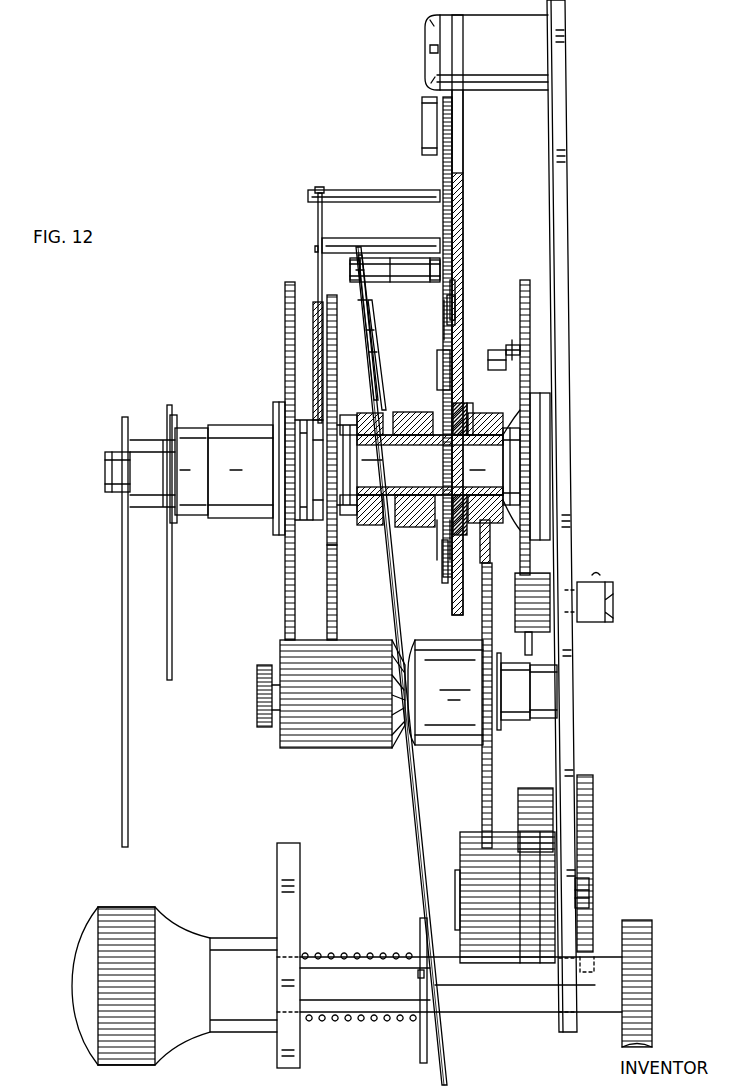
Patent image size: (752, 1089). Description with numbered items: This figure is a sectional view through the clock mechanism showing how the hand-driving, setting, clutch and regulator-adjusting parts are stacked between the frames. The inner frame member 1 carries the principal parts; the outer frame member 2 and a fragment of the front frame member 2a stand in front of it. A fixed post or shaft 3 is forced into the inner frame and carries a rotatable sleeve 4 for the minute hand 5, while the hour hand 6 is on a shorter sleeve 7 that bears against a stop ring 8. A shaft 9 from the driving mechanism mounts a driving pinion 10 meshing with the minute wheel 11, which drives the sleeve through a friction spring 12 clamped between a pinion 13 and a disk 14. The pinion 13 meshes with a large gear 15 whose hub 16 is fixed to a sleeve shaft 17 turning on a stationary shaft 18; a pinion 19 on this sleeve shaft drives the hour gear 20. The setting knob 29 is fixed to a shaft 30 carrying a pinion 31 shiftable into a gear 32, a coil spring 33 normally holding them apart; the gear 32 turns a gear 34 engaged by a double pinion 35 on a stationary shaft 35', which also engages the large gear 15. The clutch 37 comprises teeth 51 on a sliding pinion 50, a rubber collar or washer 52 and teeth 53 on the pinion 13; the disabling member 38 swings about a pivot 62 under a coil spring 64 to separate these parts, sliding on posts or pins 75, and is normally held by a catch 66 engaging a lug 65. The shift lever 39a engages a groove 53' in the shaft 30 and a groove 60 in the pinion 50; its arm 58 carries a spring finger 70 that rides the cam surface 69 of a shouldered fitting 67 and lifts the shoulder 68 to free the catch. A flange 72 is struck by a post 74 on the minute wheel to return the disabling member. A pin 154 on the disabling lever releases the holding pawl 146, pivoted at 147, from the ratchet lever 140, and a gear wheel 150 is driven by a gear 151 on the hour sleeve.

The inner frame member 1 is at (558, 195).
The outer frame member 2 is at (463, 168).
The front frame member 2a is at (283, 897).
The fixed post or shaft 3 is at (105, 470).
The sleeve 4 is at (416, 446).
The minute hand 5 is at (130, 812).
The hour hand 6 is at (172, 672).
The sleeve 7 is at (250, 495).
The stop ring 8 is at (350, 418).
The shaft 9 is at (600, 586).
The driving pinion 10 is at (530, 594).
The minute wheel 11 is at (530, 302).
The friction spring 12 is at (516, 538).
The pinion 13 is at (482, 412).
The disk 14 is at (540, 426).
The large gear 15 is at (484, 796).
The hub 16 is at (462, 728).
The sleeve shaft 17 is at (522, 702).
The stationary shaft 18 is at (258, 698).
The pinion 19 is at (338, 736).
The hour gear 20 is at (286, 580).
The setting knob 29 is at (97, 985).
The shaft 30 is at (368, 1000).
The pinion 31 is at (640, 920).
The gear 32 is at (591, 808).
The coil spring 33 is at (374, 952).
The gear 34 is at (537, 790).
The double pinion 35 is at (492, 891).
The stationary shaft 35' is at (601, 884).
The clutch 37 is at (437, 542).
The disabling member 38 is at (445, 316).
The shift lever 39a is at (412, 800).
The pinion 50 is at (422, 528).
The teeth 51 is at (432, 414).
The collar or washer 52 is at (455, 402).
The teeth 53 is at (478, 400).
The groove 53' is at (388, 990).
The arm 58 is at (382, 372).
The groove 60 is at (378, 522).
The pivot 62 is at (425, 132).
The coil spring 64 is at (447, 120).
The lug 65 is at (450, 296).
The catch 66 is at (455, 326).
The shouldered fitting 67 is at (438, 280).
The shoulder 68 is at (405, 275).
The cam surface 69 is at (354, 276).
The spring finger 70 is at (366, 292).
The flange 72 is at (490, 350).
The pin or post 74 is at (514, 346).
The posts or pins 75 is at (448, 388).
The lever 140 is at (318, 333).
The holding pawl 146 is at (316, 212).
The pivot 147 is at (397, 240).
The gear wheel 150 is at (338, 598).
The gear 151 is at (337, 540).
The pin 154 is at (386, 190).